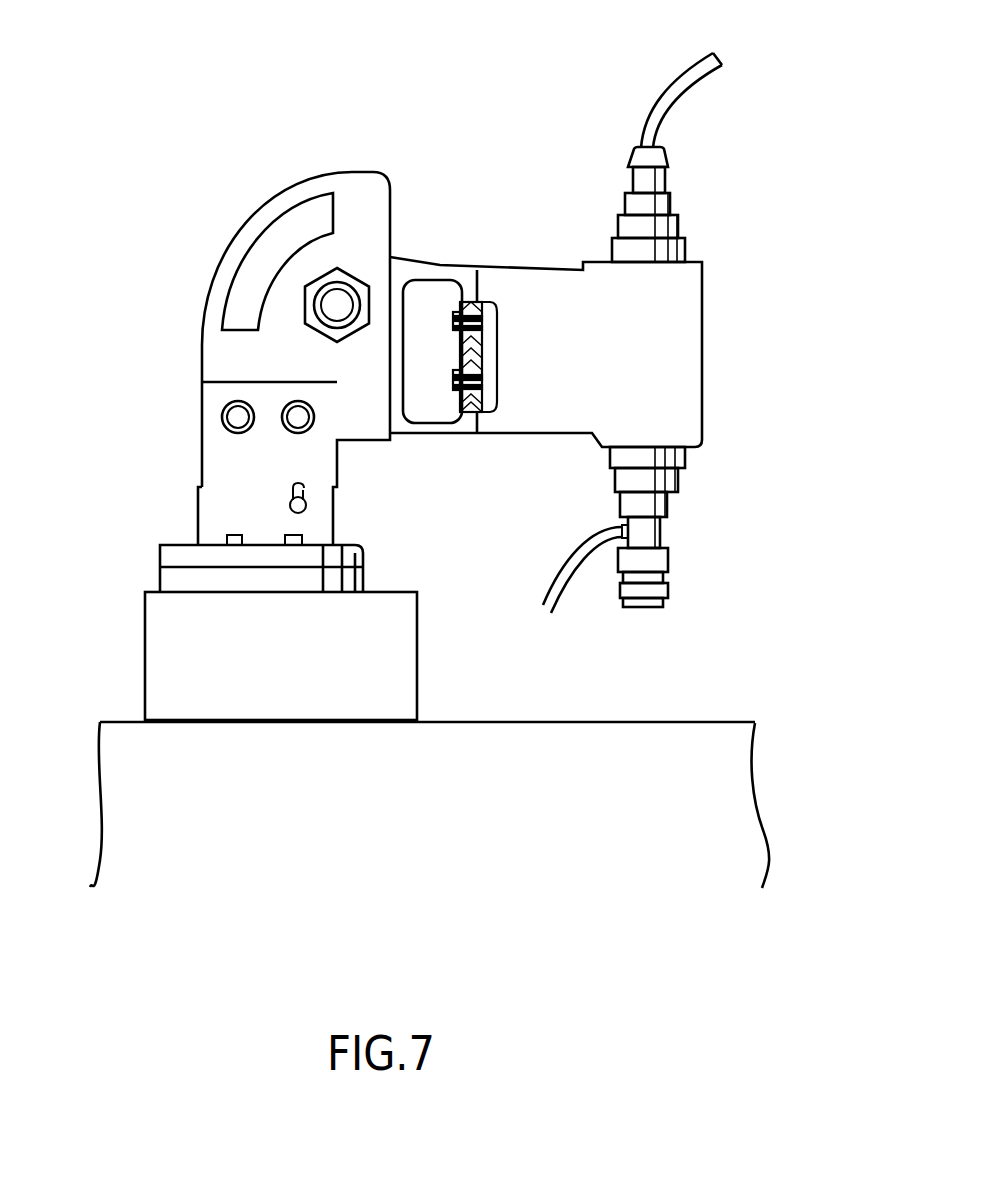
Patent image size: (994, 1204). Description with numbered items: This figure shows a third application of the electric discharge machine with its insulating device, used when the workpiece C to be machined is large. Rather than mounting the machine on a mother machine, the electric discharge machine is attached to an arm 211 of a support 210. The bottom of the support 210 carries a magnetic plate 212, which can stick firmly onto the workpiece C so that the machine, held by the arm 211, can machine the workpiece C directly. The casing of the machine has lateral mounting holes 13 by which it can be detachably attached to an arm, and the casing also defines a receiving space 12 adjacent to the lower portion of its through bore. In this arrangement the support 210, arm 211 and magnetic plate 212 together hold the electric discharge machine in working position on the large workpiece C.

The support 210 is at (272, 197).
The arm 211 is at (433, 260).
The magnetic plate 212 is at (165, 655).
The lateral mounting holes 13 is at (478, 412).
The receiving space 12 is at (498, 388).
The workpiece C is at (737, 790).